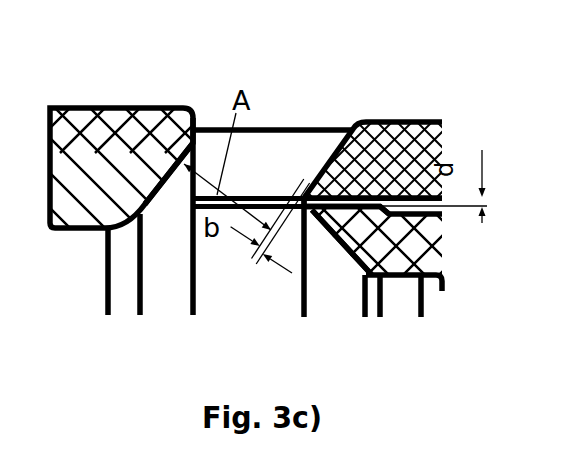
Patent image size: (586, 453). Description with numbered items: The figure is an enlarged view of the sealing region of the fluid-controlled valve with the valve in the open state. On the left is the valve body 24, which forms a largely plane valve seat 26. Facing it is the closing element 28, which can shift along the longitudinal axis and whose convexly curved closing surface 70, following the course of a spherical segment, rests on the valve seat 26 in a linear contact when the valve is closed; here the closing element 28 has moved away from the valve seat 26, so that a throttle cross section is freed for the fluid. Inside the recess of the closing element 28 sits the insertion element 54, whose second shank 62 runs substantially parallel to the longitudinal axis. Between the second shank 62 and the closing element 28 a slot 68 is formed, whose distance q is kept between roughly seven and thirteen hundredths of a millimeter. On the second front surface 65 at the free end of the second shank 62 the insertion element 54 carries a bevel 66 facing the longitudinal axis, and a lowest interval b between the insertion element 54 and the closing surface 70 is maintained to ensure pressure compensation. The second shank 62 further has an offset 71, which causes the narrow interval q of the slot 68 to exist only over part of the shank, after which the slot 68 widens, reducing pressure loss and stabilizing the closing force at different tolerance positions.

The valve body 24 is at (135, 132).
The valve seat 26 is at (158, 186).
The closing element 28 is at (387, 128).
The insertion element 54 is at (364, 208).
The second shank 62 is at (428, 255).
The second front surface 65 is at (355, 299).
The bevel 66 is at (339, 254).
The slot 68 is at (321, 208).
The closing surface 70 is at (315, 134).
The offset 71 is at (396, 195).